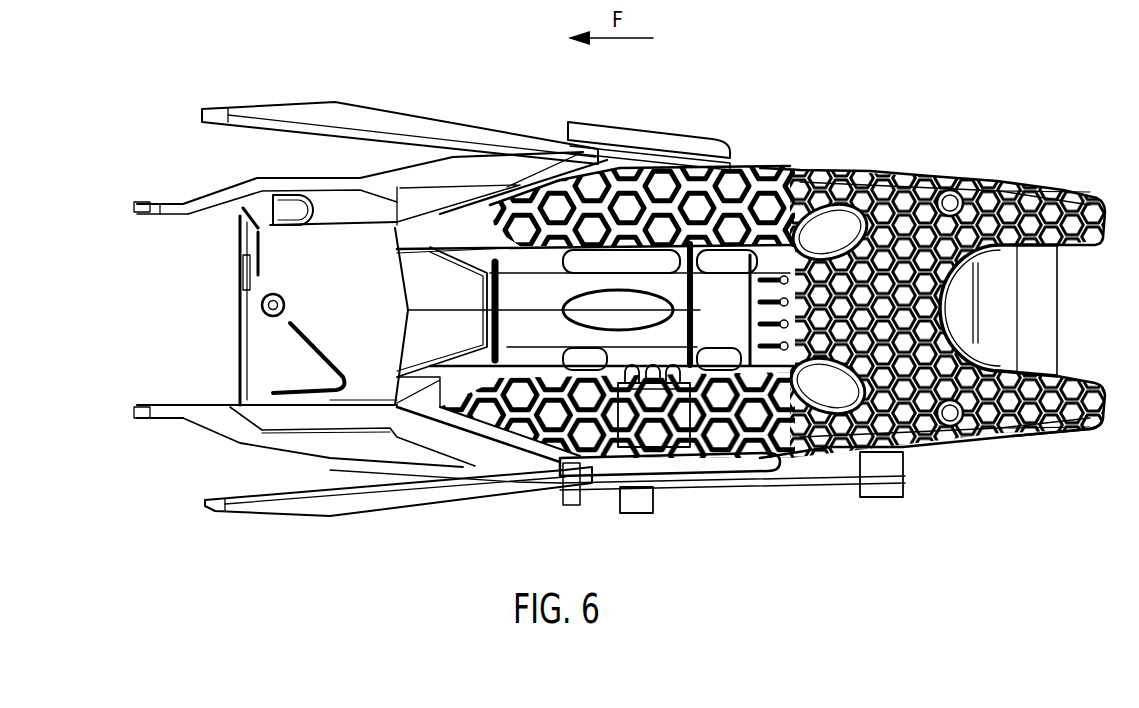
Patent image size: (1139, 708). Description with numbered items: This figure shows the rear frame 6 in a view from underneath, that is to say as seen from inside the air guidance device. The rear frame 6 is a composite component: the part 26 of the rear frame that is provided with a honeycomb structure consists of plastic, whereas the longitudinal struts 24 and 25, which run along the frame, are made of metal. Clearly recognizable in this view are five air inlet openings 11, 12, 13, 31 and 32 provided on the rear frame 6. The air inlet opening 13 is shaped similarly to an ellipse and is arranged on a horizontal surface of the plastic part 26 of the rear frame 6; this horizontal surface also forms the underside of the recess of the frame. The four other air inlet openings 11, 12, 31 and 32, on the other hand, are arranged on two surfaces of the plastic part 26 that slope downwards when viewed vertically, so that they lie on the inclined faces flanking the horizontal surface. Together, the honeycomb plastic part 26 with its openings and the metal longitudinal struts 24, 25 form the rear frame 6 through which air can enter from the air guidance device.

The rear frame 6 is at (854, 125).
The air inlet opening 11 is at (598, 250).
The air inlet opening 12 is at (688, 244).
The air inlet opening 13 is at (565, 290).
The longitudinal strut 24 is at (343, 101).
The longitudinal strut 25 is at (362, 515).
The part of the rear frame provided with a honeycomb structure 26 is at (1022, 437).
The air inlet opening 31 is at (574, 362).
The air inlet opening 32 is at (717, 367).